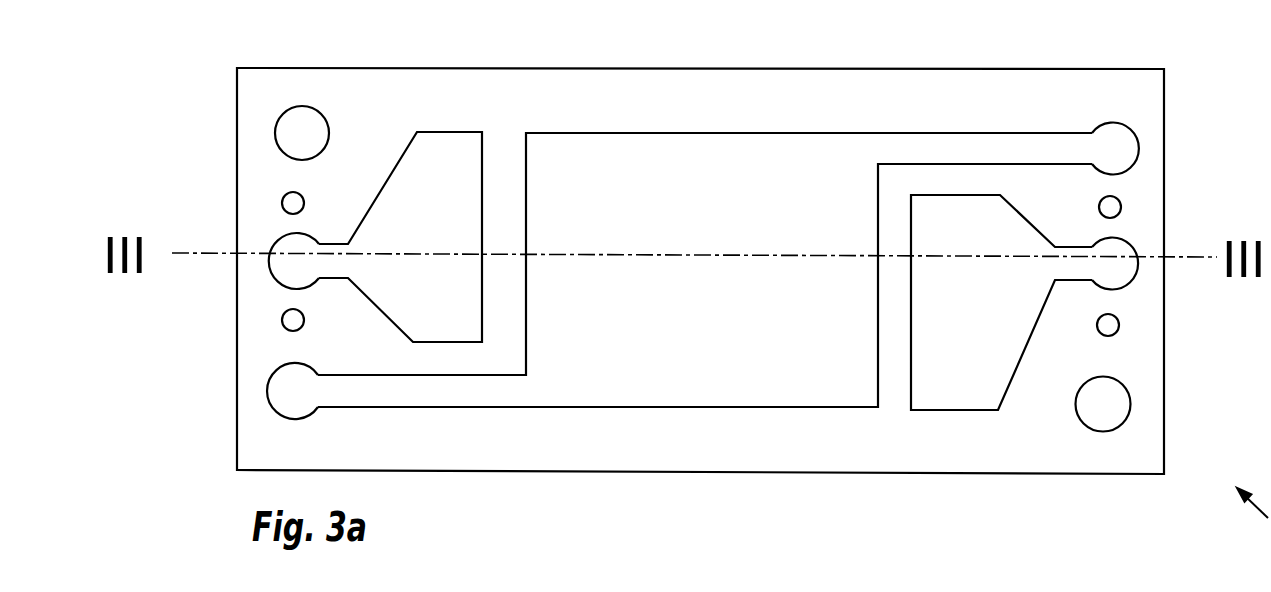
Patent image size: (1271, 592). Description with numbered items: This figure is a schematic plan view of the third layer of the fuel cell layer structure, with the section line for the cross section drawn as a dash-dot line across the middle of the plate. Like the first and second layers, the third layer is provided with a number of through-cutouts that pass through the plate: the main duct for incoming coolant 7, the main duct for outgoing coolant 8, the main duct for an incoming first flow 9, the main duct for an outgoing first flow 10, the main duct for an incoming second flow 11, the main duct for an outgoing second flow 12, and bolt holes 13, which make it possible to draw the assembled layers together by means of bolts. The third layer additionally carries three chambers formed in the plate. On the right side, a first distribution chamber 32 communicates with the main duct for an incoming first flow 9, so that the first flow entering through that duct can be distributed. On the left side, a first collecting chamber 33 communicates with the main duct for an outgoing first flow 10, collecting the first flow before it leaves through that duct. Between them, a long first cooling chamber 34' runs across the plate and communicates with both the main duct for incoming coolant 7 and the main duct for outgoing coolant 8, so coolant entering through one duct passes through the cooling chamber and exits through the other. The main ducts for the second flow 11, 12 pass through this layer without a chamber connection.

The main duct for incoming coolant 7 is at (1117, 146).
The main duct for outgoing coolant 8 is at (297, 395).
The main duct for an incoming first flow 9 is at (1102, 270).
The main duct for an outgoing first flow 10 is at (285, 253).
The main duct for an incoming second flow 11 is at (1113, 411).
The main duct for an outgoing second flow 12 is at (298, 128).
The bolt holes 13 is at (1115, 207).
The first distribution chamber 32 is at (966, 359).
The first collecting chamber 33 is at (435, 205).
The first cooling chamber 34' is at (705, 212).